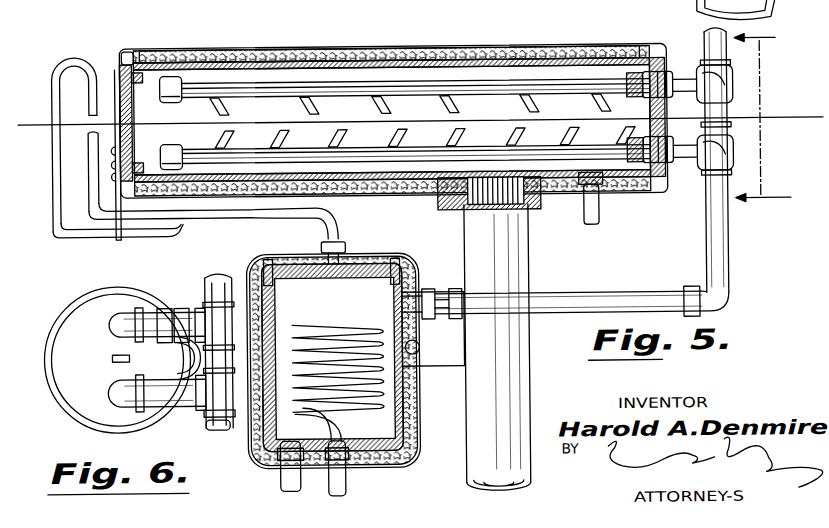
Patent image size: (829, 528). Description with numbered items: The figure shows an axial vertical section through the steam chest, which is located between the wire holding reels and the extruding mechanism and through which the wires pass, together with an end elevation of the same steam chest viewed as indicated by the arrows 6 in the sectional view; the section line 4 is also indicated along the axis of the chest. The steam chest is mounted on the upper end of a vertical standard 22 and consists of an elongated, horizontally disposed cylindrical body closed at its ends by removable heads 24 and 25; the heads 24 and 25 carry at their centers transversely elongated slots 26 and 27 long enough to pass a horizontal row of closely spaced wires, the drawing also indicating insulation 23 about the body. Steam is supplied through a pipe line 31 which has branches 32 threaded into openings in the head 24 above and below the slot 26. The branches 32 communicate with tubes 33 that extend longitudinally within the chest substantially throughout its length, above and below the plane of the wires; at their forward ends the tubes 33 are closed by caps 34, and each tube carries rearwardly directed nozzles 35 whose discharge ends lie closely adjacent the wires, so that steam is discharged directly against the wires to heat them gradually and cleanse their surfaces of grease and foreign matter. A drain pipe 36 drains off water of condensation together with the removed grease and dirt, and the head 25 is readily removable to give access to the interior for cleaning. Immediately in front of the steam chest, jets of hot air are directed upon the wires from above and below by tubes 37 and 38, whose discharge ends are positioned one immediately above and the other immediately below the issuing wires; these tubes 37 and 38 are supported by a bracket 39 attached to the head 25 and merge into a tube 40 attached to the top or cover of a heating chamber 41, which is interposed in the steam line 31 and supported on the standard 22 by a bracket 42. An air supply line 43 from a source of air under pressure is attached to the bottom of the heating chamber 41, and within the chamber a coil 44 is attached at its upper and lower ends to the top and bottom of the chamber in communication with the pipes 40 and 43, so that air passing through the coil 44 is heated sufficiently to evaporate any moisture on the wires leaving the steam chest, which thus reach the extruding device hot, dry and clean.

In FIG. 5, the section line 4- 4 is at (24, 121).
In FIG. 5, the arrows 6— 6 is at (775, 117).
In FIG. 5, the vertical standard 22 is at (539, 293).
In FIG. 5, the insulation 23 is at (460, 49).
In FIG. 5, the head 24 is at (660, 59).
In FIG. 6, the head 24 is at (78, 311).
In FIG. 5, the head 25 is at (126, 48).
In FIG. 5, the transversely elongated slot 26 is at (671, 166).
In FIG. 6, the transversely elongated slot 26 is at (110, 358).
In FIG. 5, the transversely elongated slot 27 is at (118, 92).
In FIG. 5, the pipe line 31 is at (727, 260).
In FIG. 6, the pipe line 31 is at (206, 426).
In FIG. 5, the branches 32 is at (678, 82).
In FIG. 5, the tubes 33 is at (478, 158).
In FIG. 5, the caps 34 is at (178, 77).
In FIG. 5, the nozzles 35 is at (316, 98).
In FIG. 5, the drain pipe 36 is at (592, 228).
In FIG. 5, the tube 37 is at (70, 84).
In FIG. 5, the tube 38 is at (88, 156).
In FIG. 5, the bracket 39 is at (114, 236).
In FIG. 5, the tube 40 is at (262, 216).
In FIG. 5, the heating chamber 41 is at (416, 420).
In FIG. 5, the bracket 42 is at (446, 366).
In FIG. 5, the air supply line 43 is at (343, 480).
In FIG. 5, the coil 44 is at (346, 403).